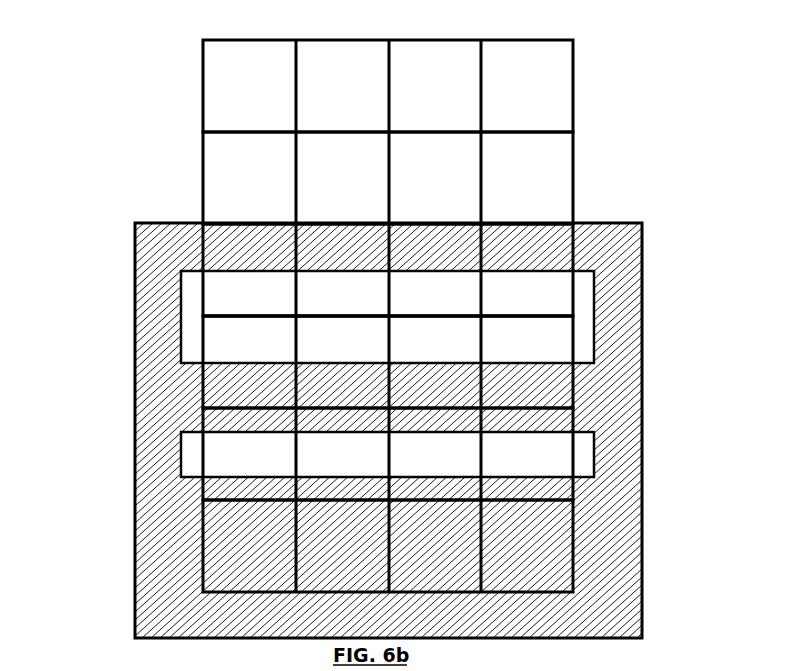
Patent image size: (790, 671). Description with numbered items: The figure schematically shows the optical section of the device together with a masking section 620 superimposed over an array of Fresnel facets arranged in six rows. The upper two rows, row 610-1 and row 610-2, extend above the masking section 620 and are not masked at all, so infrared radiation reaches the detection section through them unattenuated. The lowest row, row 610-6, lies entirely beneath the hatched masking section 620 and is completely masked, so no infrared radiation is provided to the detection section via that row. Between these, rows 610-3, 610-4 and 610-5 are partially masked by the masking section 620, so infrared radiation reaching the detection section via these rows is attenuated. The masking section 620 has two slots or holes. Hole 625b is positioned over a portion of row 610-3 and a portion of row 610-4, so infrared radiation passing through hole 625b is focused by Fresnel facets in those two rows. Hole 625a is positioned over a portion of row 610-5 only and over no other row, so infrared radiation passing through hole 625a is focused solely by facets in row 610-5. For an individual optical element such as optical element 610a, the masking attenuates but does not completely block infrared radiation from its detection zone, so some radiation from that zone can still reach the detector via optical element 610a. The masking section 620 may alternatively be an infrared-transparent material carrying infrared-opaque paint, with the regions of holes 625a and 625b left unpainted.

The first row of Fresnel facets 610-1 is at (555, 85).
The second row of Fresnel facets 610-2 is at (553, 160).
The third row of Fresnel facets 610-3 is at (557, 289).
The fourth row of Fresnel facets 610-4 is at (555, 330).
The fifth row of Fresnel facets 610-5 is at (562, 453).
The sixth row of Fresnel facets 610-6 is at (560, 528).
The optical element 610a is at (340, 348).
The masking section 620 is at (643, 576).
The hole 625a is at (196, 455).
The hole 625b is at (195, 310).